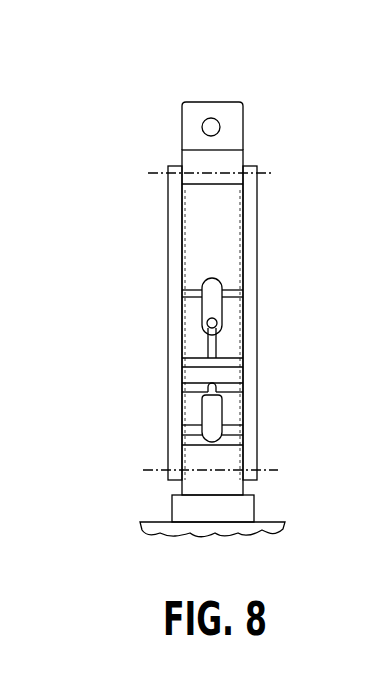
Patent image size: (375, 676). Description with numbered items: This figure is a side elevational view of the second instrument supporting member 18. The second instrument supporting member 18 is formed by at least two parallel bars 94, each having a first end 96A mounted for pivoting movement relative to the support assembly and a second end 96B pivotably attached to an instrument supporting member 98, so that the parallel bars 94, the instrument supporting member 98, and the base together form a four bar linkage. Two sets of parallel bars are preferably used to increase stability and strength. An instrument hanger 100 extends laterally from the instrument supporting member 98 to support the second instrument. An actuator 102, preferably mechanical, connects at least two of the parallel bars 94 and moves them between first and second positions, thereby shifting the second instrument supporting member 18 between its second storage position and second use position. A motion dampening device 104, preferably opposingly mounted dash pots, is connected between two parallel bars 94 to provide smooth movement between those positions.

The second instrument supporting member 18 is at (165, 140).
The parallel bars 94 is at (170, 240).
The first end 96A is at (167, 480).
The second end 96B is at (165, 166).
The instrument supporting member 98 is at (197, 110).
The instrument hanger 100 is at (213, 118).
The actuator 102 is at (205, 309).
The motion dampening device 104 is at (210, 412).